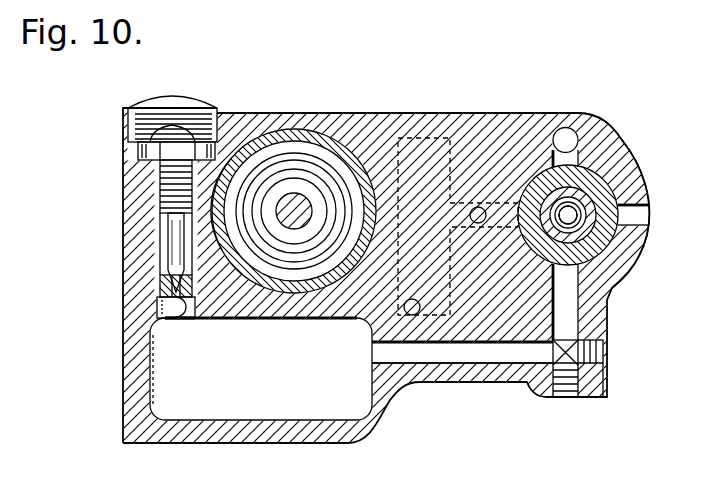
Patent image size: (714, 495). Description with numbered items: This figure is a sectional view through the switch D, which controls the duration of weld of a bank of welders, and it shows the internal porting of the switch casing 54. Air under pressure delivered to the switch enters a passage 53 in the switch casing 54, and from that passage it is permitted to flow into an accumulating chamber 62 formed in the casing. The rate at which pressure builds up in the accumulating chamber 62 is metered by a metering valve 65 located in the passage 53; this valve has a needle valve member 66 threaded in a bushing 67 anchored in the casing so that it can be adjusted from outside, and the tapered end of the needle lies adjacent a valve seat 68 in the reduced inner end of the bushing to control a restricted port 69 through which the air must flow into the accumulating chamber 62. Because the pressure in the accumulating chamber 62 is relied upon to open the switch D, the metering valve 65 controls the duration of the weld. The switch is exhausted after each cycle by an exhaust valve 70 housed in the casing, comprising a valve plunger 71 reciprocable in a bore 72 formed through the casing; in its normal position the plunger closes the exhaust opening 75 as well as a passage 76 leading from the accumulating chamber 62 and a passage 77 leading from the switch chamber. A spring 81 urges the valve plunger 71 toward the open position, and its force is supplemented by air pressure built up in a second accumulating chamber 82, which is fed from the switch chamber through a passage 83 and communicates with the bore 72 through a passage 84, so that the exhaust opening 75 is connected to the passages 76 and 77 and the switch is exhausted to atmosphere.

The switch D is at (336, 113).
The passage 53 is at (138, 260).
The switch casing 54 is at (381, 112).
The accumulating chamber 62 is at (271, 424).
The metering valve 65 is at (172, 237).
The needle valve member 66 is at (162, 198).
The bushing 67 is at (160, 175).
The valve seat 68 is at (158, 288).
The restricted port 69 is at (178, 318).
The exhaust valve 70 is at (612, 150).
The valve plunger 71 is at (578, 222).
The bore 72 is at (590, 200).
The exhaust opening 75 is at (650, 212).
The passage 76 is at (472, 365).
The passage 77 is at (572, 138).
The spring 81 is at (572, 228).
The second accumulating chamber 82 is at (440, 140).
The passage 83 is at (405, 313).
The passage 84 is at (482, 208).